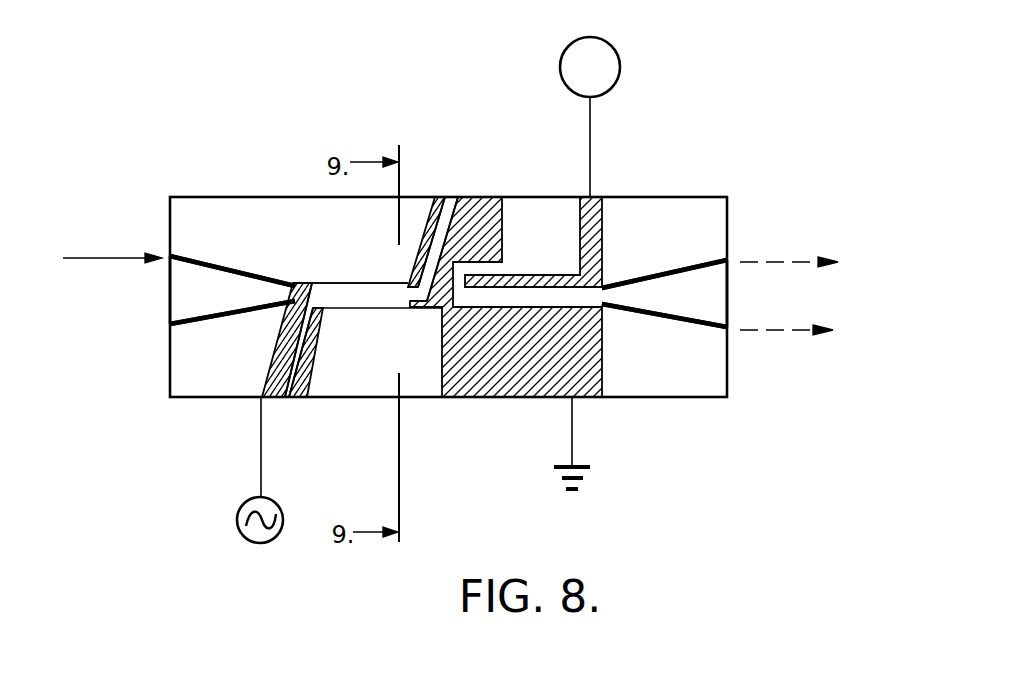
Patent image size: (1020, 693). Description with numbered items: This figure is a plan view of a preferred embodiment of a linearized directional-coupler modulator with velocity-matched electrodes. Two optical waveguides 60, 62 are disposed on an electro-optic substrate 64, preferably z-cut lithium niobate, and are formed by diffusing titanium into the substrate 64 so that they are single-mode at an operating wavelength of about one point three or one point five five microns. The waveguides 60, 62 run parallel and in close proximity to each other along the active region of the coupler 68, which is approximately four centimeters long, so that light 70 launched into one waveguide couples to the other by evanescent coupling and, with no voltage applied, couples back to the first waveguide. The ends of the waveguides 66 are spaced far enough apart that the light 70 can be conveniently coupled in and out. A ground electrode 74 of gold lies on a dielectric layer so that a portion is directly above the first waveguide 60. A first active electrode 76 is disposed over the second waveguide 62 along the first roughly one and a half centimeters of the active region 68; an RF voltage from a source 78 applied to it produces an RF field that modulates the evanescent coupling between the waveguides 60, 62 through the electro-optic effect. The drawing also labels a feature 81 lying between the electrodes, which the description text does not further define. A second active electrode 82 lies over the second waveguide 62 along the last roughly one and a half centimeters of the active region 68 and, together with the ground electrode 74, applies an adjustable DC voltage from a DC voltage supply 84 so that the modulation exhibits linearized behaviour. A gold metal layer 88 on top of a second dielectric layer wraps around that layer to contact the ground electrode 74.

The first optical waveguide 60 is at (627, 277).
The second optical waveguide 62 is at (197, 260).
The electro-optic substrate 64 is at (203, 196).
The ends of the waveguides 66 is at (171, 255).
The active region of the coupler 68 is at (356, 280).
The light 70 is at (122, 262).
The ground electrode 74 is at (485, 197).
The first active electrode 76 is at (432, 196).
The RF voltage source 78 is at (247, 525).
The insulating gap 81 is at (447, 196).
The second active electrode 82 is at (523, 275).
The DC voltage supply 84 is at (620, 62).
The metal layer 88 is at (333, 283).